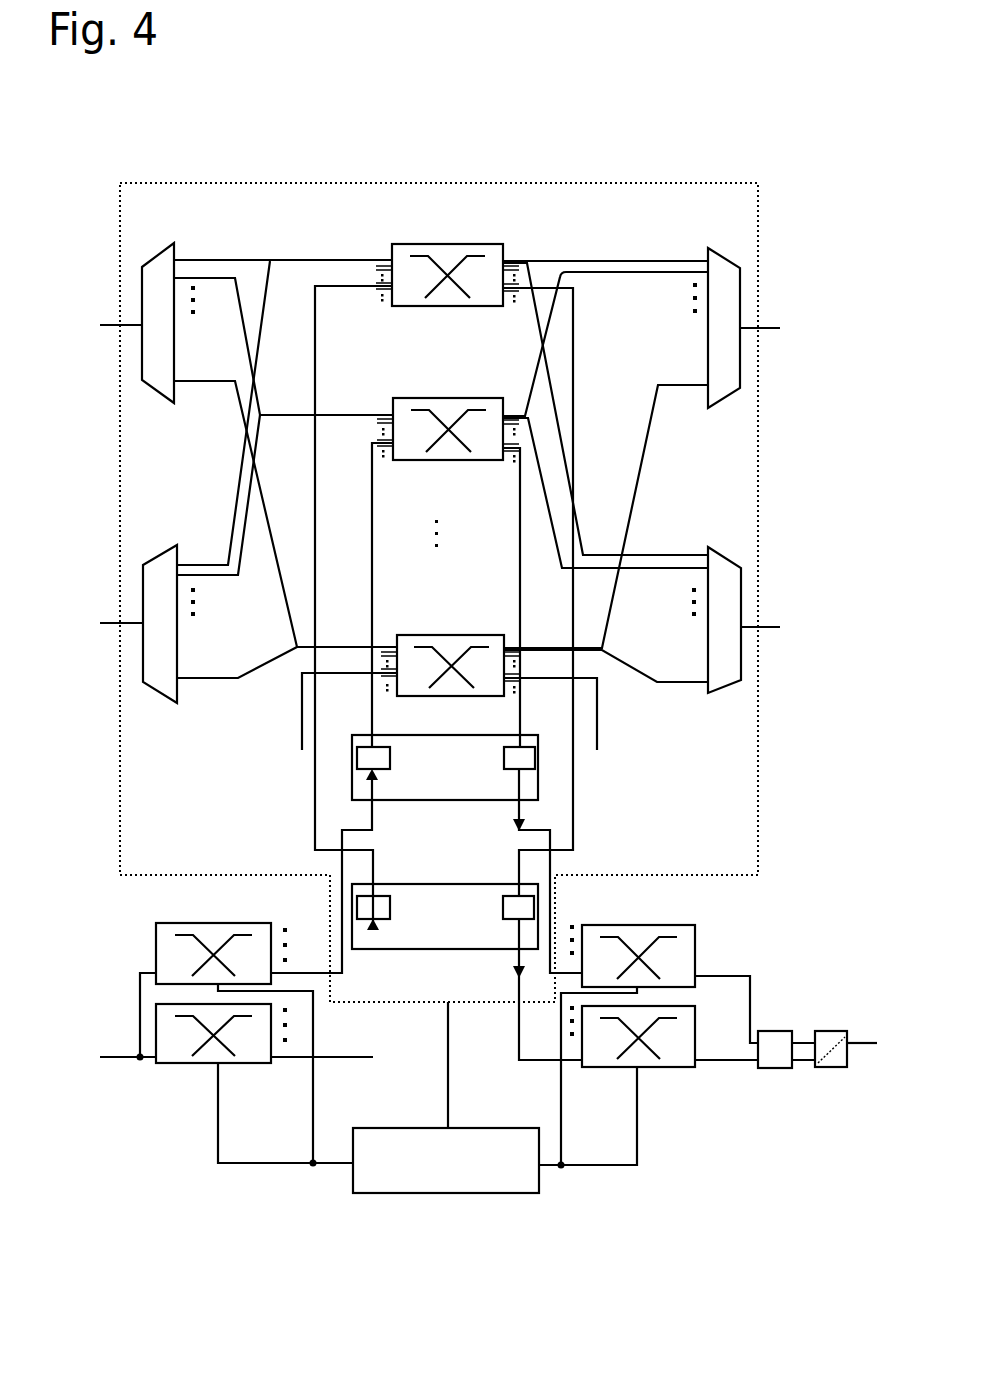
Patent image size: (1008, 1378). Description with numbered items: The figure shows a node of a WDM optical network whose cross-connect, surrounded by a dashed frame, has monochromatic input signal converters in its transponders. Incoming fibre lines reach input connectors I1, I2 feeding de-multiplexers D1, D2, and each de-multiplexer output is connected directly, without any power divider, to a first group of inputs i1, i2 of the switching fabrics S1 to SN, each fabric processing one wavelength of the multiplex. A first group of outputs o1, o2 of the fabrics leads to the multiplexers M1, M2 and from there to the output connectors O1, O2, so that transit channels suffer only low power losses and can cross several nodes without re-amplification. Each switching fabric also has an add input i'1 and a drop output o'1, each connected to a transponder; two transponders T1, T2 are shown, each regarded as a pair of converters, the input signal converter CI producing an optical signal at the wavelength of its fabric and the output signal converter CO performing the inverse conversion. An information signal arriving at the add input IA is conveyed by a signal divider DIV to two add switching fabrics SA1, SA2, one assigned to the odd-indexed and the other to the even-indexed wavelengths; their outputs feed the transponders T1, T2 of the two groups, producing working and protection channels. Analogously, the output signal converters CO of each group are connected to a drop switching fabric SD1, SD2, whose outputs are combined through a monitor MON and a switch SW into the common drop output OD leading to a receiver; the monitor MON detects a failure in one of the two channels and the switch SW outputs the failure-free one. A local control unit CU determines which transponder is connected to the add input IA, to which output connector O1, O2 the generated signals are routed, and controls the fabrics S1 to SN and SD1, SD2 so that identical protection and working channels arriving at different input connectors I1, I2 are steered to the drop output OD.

The de-multiplexer D1 is at (166, 268).
The de-multiplexer D2 is at (160, 568).
The multiplexer M1 is at (724, 272).
The multiplexer M2 is at (716, 576).
The switching fabric S1 is at (412, 252).
The switching fabric SN is at (412, 640).
The transponder T1 is at (445, 916).
The transponder T2 is at (445, 767).
The input signal converter CI is at (394, 926).
The output signal converter CO is at (494, 926).
The add switching fabric SA1 is at (212, 1063).
The add switching fabric SA2 is at (236, 923).
The drop switching fabric SD1 is at (680, 1058).
The drop switching fabric SD2 is at (609, 932).
The control unit CU is at (437, 1097).
The monitor MON is at (778, 1040).
The switch SW is at (842, 1060).
The drop output OD is at (862, 1043).
The add input IA is at (92, 1057).
The signal divider DIV is at (136, 1068).
The input connector I1 is at (104, 325).
The input connector I2 is at (118, 623).
The output connector O1 is at (766, 328).
The output connector O2 is at (772, 630).
The input i1 is at (382, 442).
The input i2 is at (342, 454).
The add input i'1 is at (349, 595).
The output o1 is at (527, 444).
The output o2 is at (542, 454).
The drop output o'1 is at (550, 583).